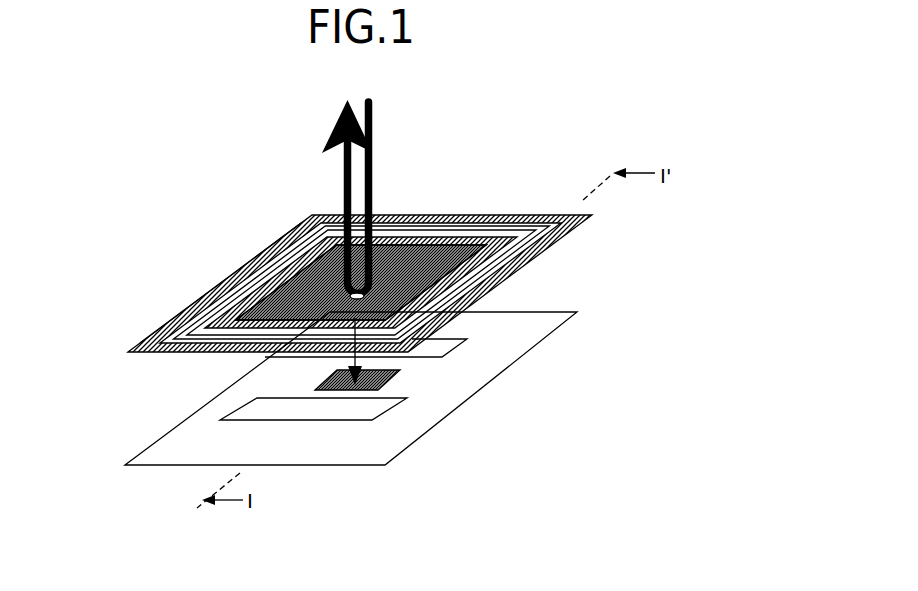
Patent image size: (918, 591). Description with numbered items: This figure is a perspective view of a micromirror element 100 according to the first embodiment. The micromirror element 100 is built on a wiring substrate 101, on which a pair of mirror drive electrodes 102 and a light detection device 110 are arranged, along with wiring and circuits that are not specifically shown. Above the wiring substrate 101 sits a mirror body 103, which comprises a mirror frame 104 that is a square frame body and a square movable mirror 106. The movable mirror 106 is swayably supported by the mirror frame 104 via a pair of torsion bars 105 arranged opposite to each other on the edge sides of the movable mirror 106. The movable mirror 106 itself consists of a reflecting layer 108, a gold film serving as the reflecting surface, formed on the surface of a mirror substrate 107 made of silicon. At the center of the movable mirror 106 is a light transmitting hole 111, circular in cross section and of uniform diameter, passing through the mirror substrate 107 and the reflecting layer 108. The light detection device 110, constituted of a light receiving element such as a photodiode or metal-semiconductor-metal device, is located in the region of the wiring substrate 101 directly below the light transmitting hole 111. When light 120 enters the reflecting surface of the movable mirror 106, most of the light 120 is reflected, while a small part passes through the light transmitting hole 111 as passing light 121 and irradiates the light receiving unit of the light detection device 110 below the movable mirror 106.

The micromirror element 100 is at (277, 210).
The wiring substrate 101 is at (397, 434).
The mirror drive electrodes 102 is at (267, 353).
The mirror body 103 is at (452, 252).
The mirror frame 104 is at (566, 232).
The torsion bars 105 is at (480, 280).
The movable mirror 106 is at (205, 313).
The mirror substrate 107 is at (512, 246).
The reflecting layer 108 is at (400, 236).
The light detection device 110 is at (392, 380).
The light transmitting hole 111 is at (350, 294).
The light 120 is at (372, 160).
The passing light 121 is at (360, 370).